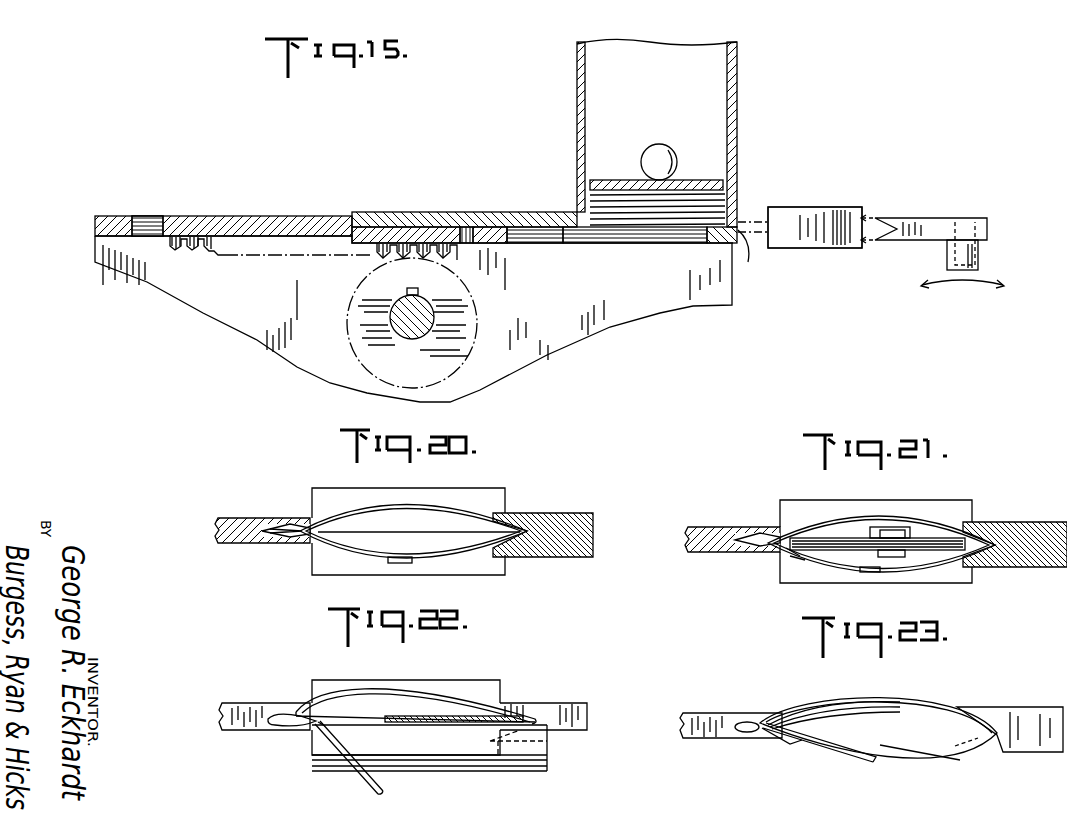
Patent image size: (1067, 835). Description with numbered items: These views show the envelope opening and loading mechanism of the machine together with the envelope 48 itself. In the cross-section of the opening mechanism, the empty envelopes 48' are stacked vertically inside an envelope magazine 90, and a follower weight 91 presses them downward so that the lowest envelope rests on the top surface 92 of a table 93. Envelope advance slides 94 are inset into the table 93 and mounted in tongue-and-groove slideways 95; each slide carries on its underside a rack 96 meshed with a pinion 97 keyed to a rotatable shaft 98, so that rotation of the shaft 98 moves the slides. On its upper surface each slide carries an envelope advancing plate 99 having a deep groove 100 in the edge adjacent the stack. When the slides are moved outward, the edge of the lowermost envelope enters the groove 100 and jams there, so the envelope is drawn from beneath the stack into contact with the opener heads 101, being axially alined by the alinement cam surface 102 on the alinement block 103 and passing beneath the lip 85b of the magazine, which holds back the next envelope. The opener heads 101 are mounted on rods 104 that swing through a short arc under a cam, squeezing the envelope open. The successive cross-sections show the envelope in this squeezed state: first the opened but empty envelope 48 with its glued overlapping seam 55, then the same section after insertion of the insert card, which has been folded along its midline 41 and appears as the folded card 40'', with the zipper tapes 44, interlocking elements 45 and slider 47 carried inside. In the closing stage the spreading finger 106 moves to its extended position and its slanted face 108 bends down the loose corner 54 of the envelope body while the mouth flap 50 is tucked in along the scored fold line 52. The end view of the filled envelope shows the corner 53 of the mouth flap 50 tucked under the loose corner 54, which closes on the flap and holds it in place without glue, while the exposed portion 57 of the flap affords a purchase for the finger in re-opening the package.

In FIG. 15, the table 93 is at (114, 215).
In FIG. 15, the envelope advance slides 94 is at (243, 216).
In FIG. 15, the envelope advancing plate 99 is at (409, 211).
In FIG. 20, the envelope advancing plate 99 is at (238, 518).
In FIG. 22, the envelope advancing plate 99 is at (240, 703).
In FIG. 21, the envelope advancing plate 99 is at (712, 527).
In FIG. 23, the envelope advancing plate 99 is at (705, 713).
In FIG. 15, the deep groove 100 is at (582, 226).
In FIG. 20, the deep groove 100 is at (279, 515).
In FIG. 22, the deep groove 100 is at (275, 712).
In FIG. 21, the deep groove 100 is at (750, 525).
In FIG. 23, the deep groove 100 is at (750, 722).
In FIG. 15, the top surface 92 is at (645, 219).
In FIG. 15, the tongue-and-groove slideways 95 is at (670, 243).
In FIG. 15, the rack 96 is at (199, 255).
In FIG. 15, the pinion 97 is at (390, 262).
In FIG. 15, the rotatable shaft 98 is at (410, 336).
In FIG. 15, the envelope magazine 90 is at (739, 95).
In FIG. 15, the follower weight 91 is at (710, 180).
In FIG. 15, the empty envelopes 48' is at (641, 153).
In FIG. 15, the lip 85b is at (757, 247).
In FIG. 15, the alinement cam surface 102 is at (806, 249).
In FIG. 15, the alinement block 103 is at (806, 206).
In FIG. 20, the alinement block 103 is at (376, 488).
In FIG. 22, the alinement block 103 is at (368, 680).
In FIG. 21, the alinement block 103 is at (835, 500).
In FIG. 15, the opener heads 101 is at (920, 217).
In FIG. 20, the opener heads 101 is at (568, 512).
In FIG. 22, the opener heads 101 is at (548, 703).
In FIG. 21, the opener heads 101 is at (1045, 522).
In FIG. 23, the opener heads 101 is at (1030, 708).
In FIG. 15, the rods 104 is at (946, 255).
In FIG. 20, the envelope 48 is at (413, 511).
In FIG. 22, the envelope 48 is at (416, 688).
In FIG. 21, the envelope 48 is at (881, 525).
In FIG. 23, the envelope 48 is at (878, 713).
In FIG. 20, the glued overlapping seam 55 is at (397, 563).
In FIG. 21, the glued overlapping seam 55 is at (868, 572).
In FIG. 21, the tapes 44 is at (850, 530).
In FIG. 21, the slider 47 is at (910, 527).
In FIG. 21, the interlocking elements 45 is at (905, 558).
In FIG. 21, the midline 41 is at (790, 552).
In FIG. 21, the holder 40'' is at (795, 582).
In FIG. 22, the spreading finger 106 is at (460, 766).
In FIG. 22, the loose corner 54 is at (368, 788).
In FIG. 23, the loose corner 54 is at (843, 763).
In FIG. 22, the slanted face 108 is at (330, 757).
In FIG. 23, the fold line 52 is at (826, 705).
In FIG. 23, the corner 53 is at (790, 746).
In FIG. 23, the mouth flap 50 is at (918, 746).
In FIG. 23, the exposed portion 57 is at (970, 749).